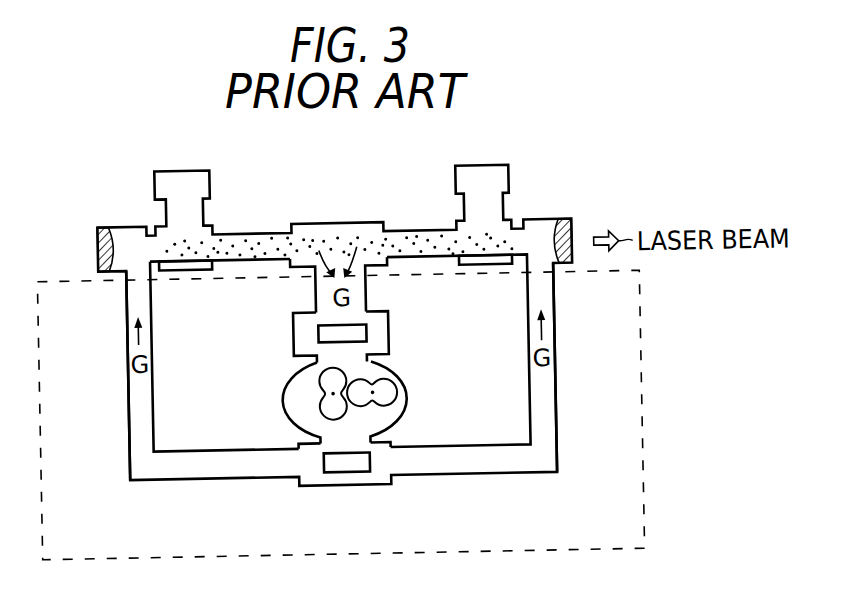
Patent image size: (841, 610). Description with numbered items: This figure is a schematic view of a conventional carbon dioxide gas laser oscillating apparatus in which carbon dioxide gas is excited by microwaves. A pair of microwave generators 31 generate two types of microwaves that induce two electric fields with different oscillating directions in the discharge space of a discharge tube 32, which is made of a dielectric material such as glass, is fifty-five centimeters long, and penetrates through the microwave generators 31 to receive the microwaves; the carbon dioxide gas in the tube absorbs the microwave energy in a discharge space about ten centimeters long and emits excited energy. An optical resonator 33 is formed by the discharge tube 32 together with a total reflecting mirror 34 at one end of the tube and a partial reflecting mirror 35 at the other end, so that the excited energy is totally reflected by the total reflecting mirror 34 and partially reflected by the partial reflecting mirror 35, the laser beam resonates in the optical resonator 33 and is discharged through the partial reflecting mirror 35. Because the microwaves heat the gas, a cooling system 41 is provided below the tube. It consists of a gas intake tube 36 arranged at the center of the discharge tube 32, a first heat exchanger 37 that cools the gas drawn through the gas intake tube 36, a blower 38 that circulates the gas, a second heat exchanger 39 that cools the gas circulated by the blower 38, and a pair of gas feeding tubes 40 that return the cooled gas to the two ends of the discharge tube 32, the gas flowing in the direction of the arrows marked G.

The microwave generators 31 is at (214, 181).
The discharge tube 32 is at (243, 232).
The optical resonator 33 is at (376, 218).
The total reflecting mirror 34 is at (101, 228).
The partial reflecting mirror 35 is at (574, 225).
The gas intake tube 36 is at (368, 291).
The first heat exchanger 37 is at (368, 333).
The blower 38 is at (390, 394).
The second heat exchanger 39 is at (351, 466).
The gas feeding tubes 40 is at (129, 391).
The cooling system 41 is at (642, 302).